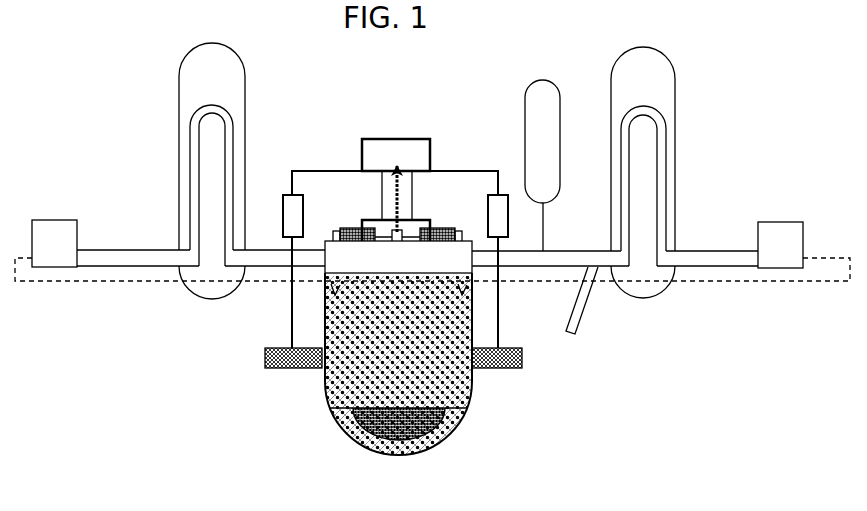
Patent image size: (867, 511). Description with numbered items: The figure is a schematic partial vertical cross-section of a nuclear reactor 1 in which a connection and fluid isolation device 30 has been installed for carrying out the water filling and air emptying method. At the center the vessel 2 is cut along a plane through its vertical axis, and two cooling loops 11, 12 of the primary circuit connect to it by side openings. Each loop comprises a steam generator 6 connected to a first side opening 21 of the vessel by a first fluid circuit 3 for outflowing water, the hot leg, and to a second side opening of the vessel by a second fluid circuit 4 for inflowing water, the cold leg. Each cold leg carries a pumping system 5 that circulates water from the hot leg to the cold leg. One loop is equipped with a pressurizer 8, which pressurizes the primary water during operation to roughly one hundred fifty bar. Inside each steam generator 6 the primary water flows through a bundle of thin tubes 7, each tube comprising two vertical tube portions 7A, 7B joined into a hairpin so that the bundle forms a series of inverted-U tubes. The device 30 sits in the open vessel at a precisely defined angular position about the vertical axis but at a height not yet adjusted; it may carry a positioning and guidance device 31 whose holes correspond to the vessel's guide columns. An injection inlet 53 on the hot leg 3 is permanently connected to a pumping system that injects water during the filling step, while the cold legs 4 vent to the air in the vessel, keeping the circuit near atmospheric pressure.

The fluid circulation system 1 is at (128, 100).
The vessel 2 is at (322, 405).
The first fluid circuit 3 is at (258, 250).
The second fluid circuit 4 is at (115, 249).
The pumping system 5 is at (53, 221).
The steam generator 6 is at (183, 67).
The tube 7 is at (424, 170).
The vertical tube portion 7A is at (233, 167).
The vertical tube portion 7B is at (192, 222).
The pressurizer 8 is at (533, 118).
The cooling loop 11 is at (102, 308).
The cooling loop 12 is at (758, 312).
The first side opening 21 is at (318, 258).
The connection and fluid isolation device 30 is at (355, 208).
The positioning and guidance device 31 is at (443, 170).
The injection inlet 53 is at (578, 320).